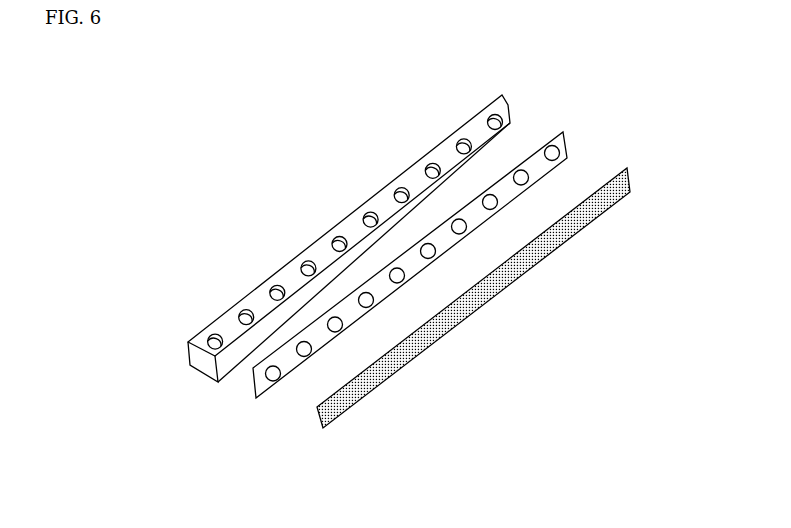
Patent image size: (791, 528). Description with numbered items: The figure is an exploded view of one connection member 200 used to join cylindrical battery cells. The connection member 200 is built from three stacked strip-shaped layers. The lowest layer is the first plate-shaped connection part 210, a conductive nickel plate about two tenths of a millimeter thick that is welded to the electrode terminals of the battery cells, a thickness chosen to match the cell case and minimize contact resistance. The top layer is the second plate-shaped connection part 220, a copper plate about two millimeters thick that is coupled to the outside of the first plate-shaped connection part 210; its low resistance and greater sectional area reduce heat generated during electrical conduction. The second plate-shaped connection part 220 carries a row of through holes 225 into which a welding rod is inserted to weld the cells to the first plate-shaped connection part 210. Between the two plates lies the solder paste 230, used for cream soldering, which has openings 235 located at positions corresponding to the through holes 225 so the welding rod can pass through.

The connection member 200 is at (98, 147).
The first plate-shaped connection part 210 is at (552, 237).
The second plate-shaped connection part 220 is at (232, 327).
The through holes 225 is at (307, 267).
The solder paste 230 is at (290, 358).
The openings 235 is at (268, 376).